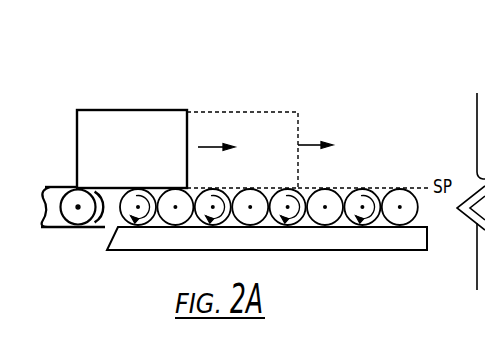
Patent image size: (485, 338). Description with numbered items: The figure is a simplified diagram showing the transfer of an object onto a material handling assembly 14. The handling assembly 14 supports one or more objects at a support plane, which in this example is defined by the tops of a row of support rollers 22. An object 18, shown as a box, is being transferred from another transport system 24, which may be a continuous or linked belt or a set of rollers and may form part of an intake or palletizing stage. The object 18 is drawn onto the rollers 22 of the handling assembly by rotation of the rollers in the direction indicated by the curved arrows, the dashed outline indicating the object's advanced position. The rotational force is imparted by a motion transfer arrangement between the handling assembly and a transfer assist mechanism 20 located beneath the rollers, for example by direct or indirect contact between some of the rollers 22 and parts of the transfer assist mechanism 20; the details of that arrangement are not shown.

The handling assembly 14 is at (408, 185).
The object 18 is at (143, 161).
The transfer assist mechanism 20 is at (125, 252).
The support rollers 22 is at (302, 188).
The transport system 24 is at (72, 232).